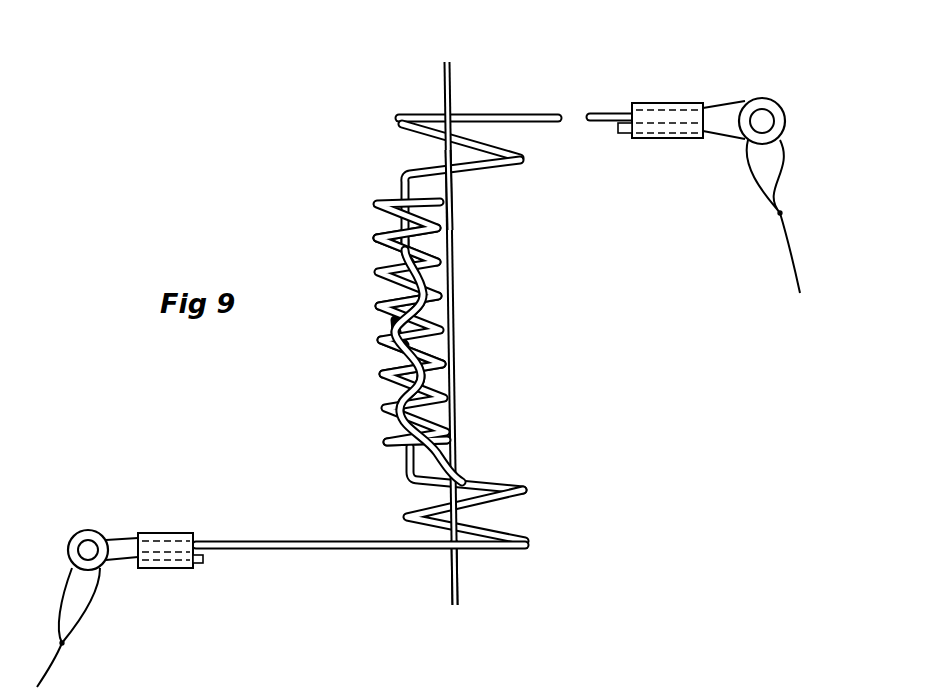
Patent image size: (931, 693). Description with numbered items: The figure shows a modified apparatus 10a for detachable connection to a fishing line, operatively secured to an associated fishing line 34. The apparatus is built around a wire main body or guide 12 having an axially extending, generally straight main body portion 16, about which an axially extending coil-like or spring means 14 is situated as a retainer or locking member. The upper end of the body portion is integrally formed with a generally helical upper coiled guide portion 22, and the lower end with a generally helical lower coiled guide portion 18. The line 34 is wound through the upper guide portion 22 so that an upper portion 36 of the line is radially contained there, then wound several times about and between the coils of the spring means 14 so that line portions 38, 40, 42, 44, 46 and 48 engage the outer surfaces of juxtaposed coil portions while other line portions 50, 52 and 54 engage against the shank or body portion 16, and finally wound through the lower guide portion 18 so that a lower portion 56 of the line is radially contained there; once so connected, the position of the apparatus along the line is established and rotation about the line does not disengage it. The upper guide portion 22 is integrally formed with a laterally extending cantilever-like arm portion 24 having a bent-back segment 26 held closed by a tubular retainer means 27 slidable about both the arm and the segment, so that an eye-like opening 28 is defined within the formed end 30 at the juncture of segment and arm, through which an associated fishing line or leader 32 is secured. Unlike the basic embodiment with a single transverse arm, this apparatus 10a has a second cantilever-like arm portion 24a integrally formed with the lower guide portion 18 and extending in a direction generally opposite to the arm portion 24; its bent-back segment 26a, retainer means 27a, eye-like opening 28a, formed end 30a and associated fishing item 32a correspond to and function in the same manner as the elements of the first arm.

The apparatus 10a is at (596, 312).
The main body or guide 12 is at (476, 99).
The coil-like or spring means 14 is at (455, 334).
The main body portion 16 is at (400, 288).
The lower coiled guide portion 18 is at (527, 490).
The upper coiled guide portion 22 is at (527, 160).
The arm portion 24 is at (600, 112).
The second arm portion 24a is at (352, 550).
The bent-back segment 26 is at (623, 135).
The bent-back segment 26a is at (198, 565).
The retainer means 27 is at (655, 102).
The retainer means 27a is at (173, 533).
The eye-like opening 28 is at (760, 108).
The eye-like opening 28a is at (100, 540).
The formed end 30 is at (787, 113).
The formed end 30a is at (73, 538).
The fishing line or leader 32 is at (768, 205).
The fishing line or leader 32a is at (88, 625).
The fishing line 34 is at (458, 190).
The upper portion of line 36 is at (452, 75).
The line portion 38 is at (440, 212).
The line portion 40 is at (400, 270).
The line portion 42 is at (440, 313).
The line portion 44 is at (387, 352).
The line portion 46 is at (435, 378).
The line portion 48 is at (400, 440).
The line portion 50 is at (398, 245).
The line portion 52 is at (393, 325).
The line portion 54 is at (397, 400).
The lower portion of line 56 is at (460, 575).